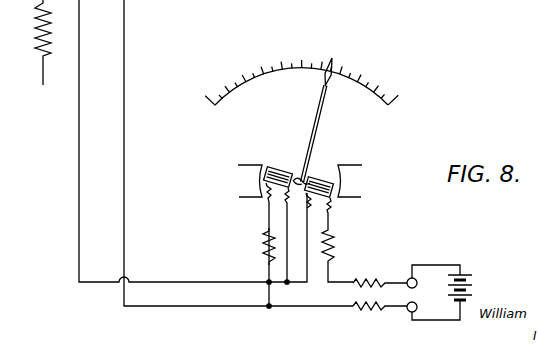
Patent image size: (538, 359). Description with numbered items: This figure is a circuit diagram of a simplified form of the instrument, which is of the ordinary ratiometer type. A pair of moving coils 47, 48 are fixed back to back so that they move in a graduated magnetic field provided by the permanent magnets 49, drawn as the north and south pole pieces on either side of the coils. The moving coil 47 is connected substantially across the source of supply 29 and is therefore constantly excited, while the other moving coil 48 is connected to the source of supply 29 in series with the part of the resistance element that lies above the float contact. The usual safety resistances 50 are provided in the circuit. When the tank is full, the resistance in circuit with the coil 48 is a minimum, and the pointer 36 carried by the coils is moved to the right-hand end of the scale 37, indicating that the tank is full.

The source of supply 29 is at (439, 292).
The pointer 36 is at (319, 108).
The scale 37 is at (389, 106).
The moving coil 47 is at (277, 166).
The moving coil 48 is at (318, 170).
The permanent magnets 49 is at (252, 186).
The safety resistances 50 is at (266, 243).